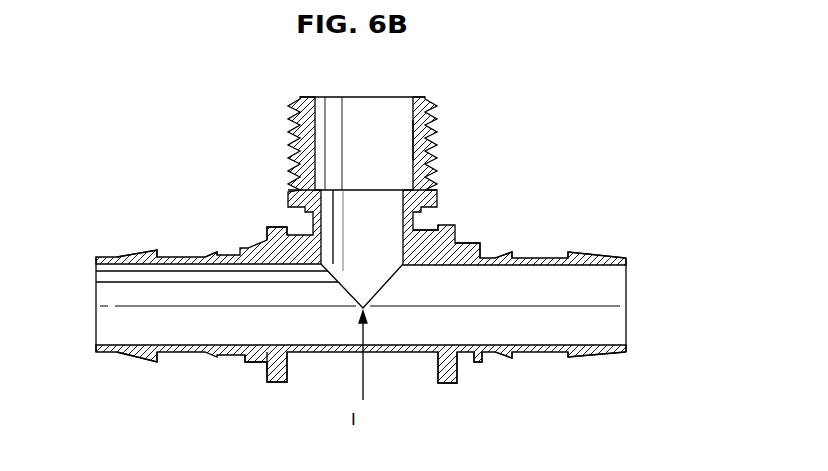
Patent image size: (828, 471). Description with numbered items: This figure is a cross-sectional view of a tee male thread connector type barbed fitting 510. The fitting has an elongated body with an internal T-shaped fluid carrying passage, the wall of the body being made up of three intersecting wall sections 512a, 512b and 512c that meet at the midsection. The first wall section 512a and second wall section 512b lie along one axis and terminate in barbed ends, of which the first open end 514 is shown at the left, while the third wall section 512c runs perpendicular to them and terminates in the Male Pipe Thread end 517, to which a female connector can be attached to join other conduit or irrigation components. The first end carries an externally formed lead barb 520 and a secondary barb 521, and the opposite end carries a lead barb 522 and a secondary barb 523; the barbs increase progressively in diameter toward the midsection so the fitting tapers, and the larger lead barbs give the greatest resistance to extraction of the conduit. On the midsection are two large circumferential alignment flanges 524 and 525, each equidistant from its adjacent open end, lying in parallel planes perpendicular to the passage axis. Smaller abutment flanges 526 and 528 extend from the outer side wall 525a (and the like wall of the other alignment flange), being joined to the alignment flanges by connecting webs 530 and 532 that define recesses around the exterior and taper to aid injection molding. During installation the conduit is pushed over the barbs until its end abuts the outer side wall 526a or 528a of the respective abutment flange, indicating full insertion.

The fitting 510 is at (519, 128).
The first wall section 512a is at (188, 254).
The second wall section 512b is at (582, 252).
The third wall section 512c is at (430, 141).
The first open end 514 is at (140, 253).
The third open end 517 is at (437, 102).
The lead barb 520 is at (155, 361).
The secondary barb 521 is at (217, 252).
The lead barb 522 is at (580, 358).
The secondary barb 523 is at (513, 253).
The alignment flange 524 is at (277, 383).
The alignment flange 525 is at (446, 384).
The outer side wall 525a is at (442, 228).
The abutment flange 526 is at (606, 280).
The outer side wall 526a is at (245, 362).
The abutment flange 528 is at (457, 245).
The outer side wall 528a is at (484, 360).
The connecting web 530 is at (262, 366).
The connecting web 532 is at (461, 364).